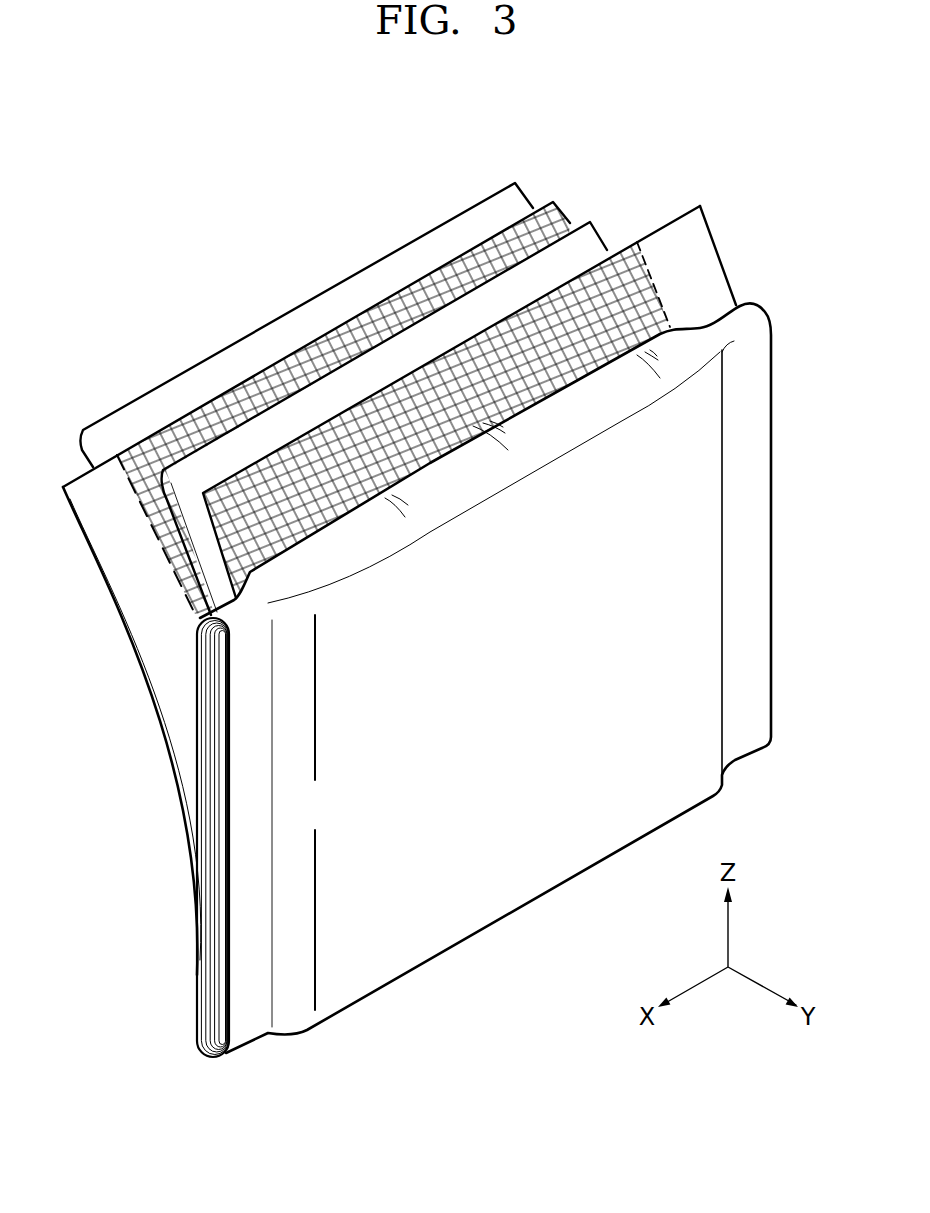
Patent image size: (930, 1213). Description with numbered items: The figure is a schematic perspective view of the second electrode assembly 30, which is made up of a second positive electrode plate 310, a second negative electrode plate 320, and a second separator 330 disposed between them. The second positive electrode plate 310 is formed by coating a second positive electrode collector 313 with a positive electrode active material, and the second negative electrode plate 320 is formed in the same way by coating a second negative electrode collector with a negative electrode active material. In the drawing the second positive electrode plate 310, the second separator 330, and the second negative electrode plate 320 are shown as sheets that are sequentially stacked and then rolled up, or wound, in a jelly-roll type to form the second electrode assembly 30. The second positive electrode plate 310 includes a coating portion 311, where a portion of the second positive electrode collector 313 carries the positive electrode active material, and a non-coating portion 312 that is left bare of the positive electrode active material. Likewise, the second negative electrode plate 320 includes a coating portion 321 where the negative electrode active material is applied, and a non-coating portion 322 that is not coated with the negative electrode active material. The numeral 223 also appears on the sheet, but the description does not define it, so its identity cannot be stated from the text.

The second electrode assembly 30 is at (748, 188).
The case accommodating portion 223 is at (725, 262).
The second positive electrode plate 310 is at (153, 311).
The coating portion 311 is at (173, 440).
The non-coating portion 312 is at (105, 490).
The second positive electrode collector 313 is at (108, 576).
The second negative electrode plate 320 is at (699, 134).
The coating portion 321 is at (583, 302).
The non-coating portion 322 is at (683, 230).
The second separator 330 is at (505, 293).